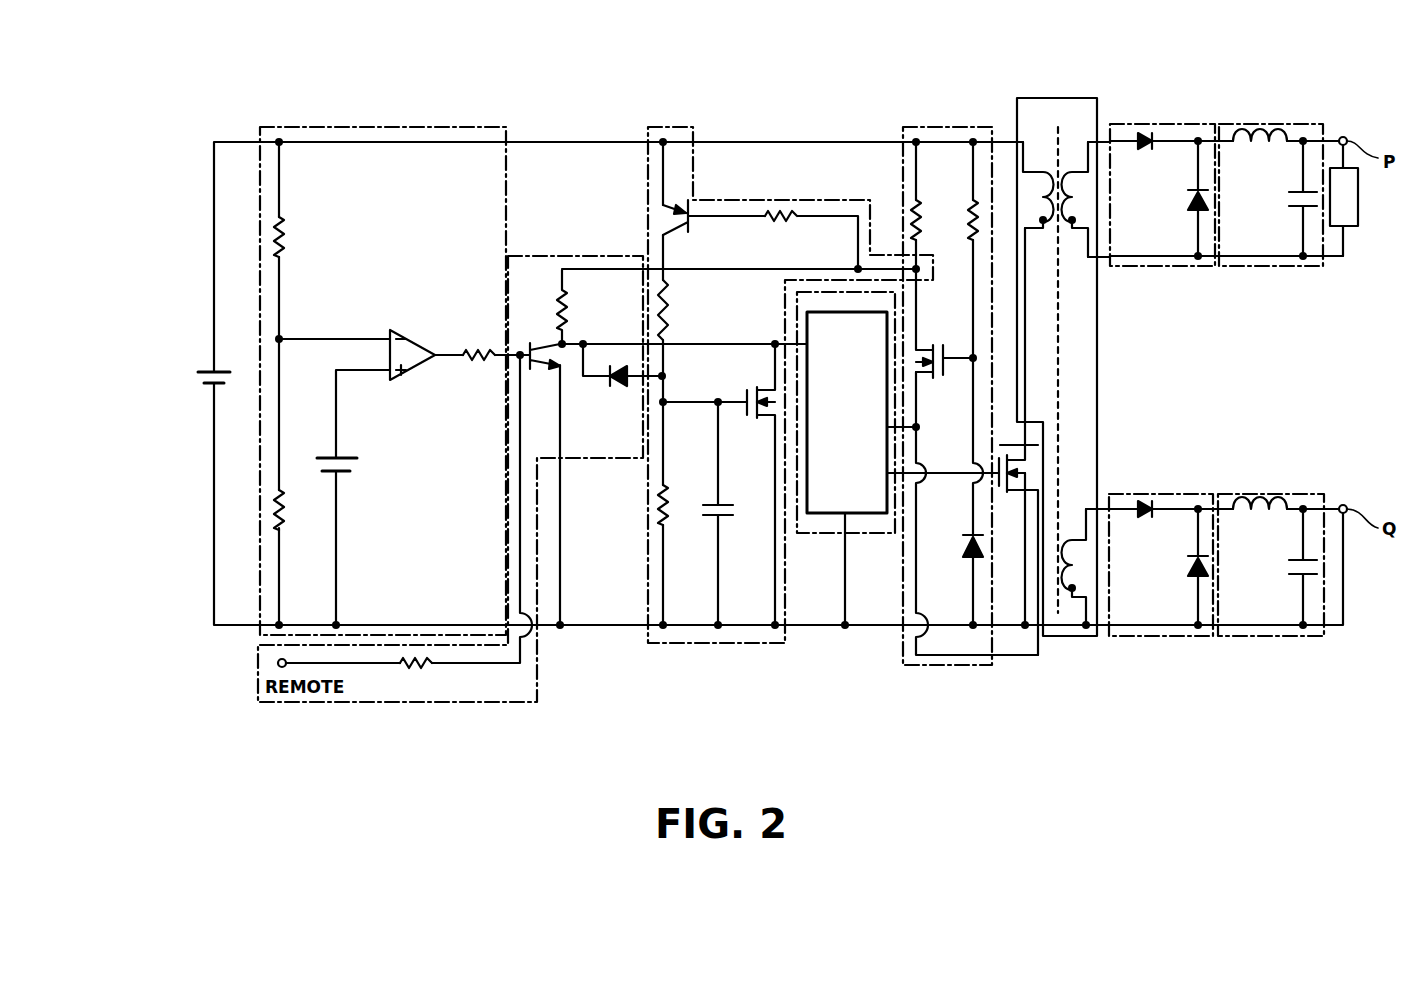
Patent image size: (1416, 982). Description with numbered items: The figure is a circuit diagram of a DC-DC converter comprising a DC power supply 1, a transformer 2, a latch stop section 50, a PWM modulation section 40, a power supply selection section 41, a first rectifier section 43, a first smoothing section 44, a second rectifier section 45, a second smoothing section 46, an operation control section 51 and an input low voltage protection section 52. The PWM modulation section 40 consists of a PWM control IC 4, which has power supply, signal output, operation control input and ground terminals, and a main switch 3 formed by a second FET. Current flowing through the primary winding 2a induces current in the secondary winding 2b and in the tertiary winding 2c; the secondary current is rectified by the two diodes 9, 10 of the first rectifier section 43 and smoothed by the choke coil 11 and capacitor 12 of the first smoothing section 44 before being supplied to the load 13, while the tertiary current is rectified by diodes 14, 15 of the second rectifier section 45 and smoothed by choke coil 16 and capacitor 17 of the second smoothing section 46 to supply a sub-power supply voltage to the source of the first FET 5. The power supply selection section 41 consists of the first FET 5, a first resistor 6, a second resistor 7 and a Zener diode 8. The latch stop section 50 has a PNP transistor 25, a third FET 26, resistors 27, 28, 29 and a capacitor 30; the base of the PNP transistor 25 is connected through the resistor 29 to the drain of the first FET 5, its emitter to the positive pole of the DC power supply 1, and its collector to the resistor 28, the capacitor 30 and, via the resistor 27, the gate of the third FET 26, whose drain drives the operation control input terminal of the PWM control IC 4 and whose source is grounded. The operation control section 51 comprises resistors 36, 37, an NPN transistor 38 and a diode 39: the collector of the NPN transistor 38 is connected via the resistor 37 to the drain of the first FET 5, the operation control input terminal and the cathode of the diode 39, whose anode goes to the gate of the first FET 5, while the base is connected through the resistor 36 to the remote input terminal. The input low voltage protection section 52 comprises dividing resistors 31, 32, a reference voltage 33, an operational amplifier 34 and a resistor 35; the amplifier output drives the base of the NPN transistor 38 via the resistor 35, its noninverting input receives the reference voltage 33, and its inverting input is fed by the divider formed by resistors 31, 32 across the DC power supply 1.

The DC power supply 1 is at (197, 378).
The transformer 2 is at (1098, 100).
The primary winding 2a is at (1044, 162).
The secondary winding 2b is at (1076, 232).
The tertiary winding 2c is at (1072, 525).
The main switch 3 is at (1022, 495).
The PWM control IC 4 is at (823, 534).
The first FET 5 is at (935, 378).
The first resistor 6 is at (920, 213).
The second resistor 7 is at (978, 220).
The Zener diode 8 is at (965, 548).
The diode 9 is at (1145, 150).
The diode 10 is at (1190, 205).
The choke coil 11 is at (1260, 148).
The capacitor 12 is at (1291, 199).
The load 13 is at (1358, 212).
The diode 14 is at (1145, 497).
The diode 15 is at (1190, 565).
The choke coil 16 is at (1260, 518).
The capacitor 17 is at (1290, 560).
The PNP transistor 25 is at (680, 235).
The third FET 26 is at (752, 420).
The resistor 27 is at (668, 300).
The resistor 28 is at (660, 505).
The resistor 29 is at (778, 222).
The capacitor 30 is at (702, 510).
The dividing resistor 31 is at (284, 233).
The dividing resistor 32 is at (284, 510).
The reference voltage 33 is at (352, 462).
The operational amplifier 34 is at (412, 333).
The resistor 35 is at (477, 362).
The resistor 36 is at (416, 672).
The resistor 37 is at (557, 272).
The NPN transistor 38 is at (533, 335).
The diode 39 is at (613, 388).
The PWM modulation section 40 is at (868, 534).
The power supply selection section 41 is at (945, 667).
The first rectifier section 43 is at (1200, 266).
The first smoothing section 44 is at (1290, 266).
The second rectifier section 45 is at (1198, 494).
The second smoothing section 46 is at (1300, 494).
The latch stop section 50 is at (713, 645).
The operation control section 51 is at (513, 702).
The input low voltage protection section 52 is at (409, 127).